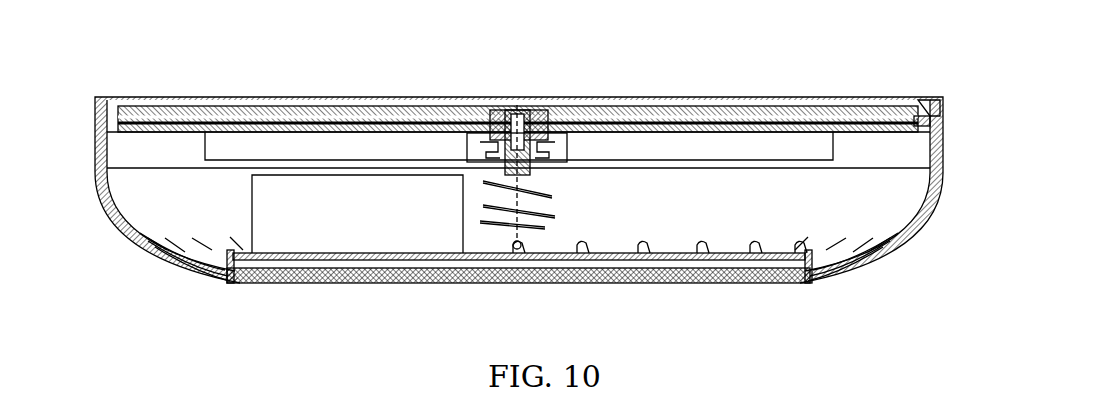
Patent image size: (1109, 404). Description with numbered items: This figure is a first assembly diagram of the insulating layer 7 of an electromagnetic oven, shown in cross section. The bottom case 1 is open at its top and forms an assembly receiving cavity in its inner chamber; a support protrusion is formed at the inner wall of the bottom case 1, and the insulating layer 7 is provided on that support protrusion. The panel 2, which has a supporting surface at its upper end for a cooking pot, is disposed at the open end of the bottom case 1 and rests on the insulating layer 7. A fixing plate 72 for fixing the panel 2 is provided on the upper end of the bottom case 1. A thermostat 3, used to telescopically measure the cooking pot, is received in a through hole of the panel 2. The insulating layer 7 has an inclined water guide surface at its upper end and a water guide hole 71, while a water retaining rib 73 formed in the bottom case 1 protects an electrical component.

The bottom case 1 is at (908, 225).
The panel 2 is at (673, 108).
The thermostat 3 is at (547, 110).
The insulating layer 7 is at (745, 123).
The water guide hole 71 is at (918, 120).
The fixing plate 72 is at (934, 102).
The water retaining rib 73 is at (812, 283).